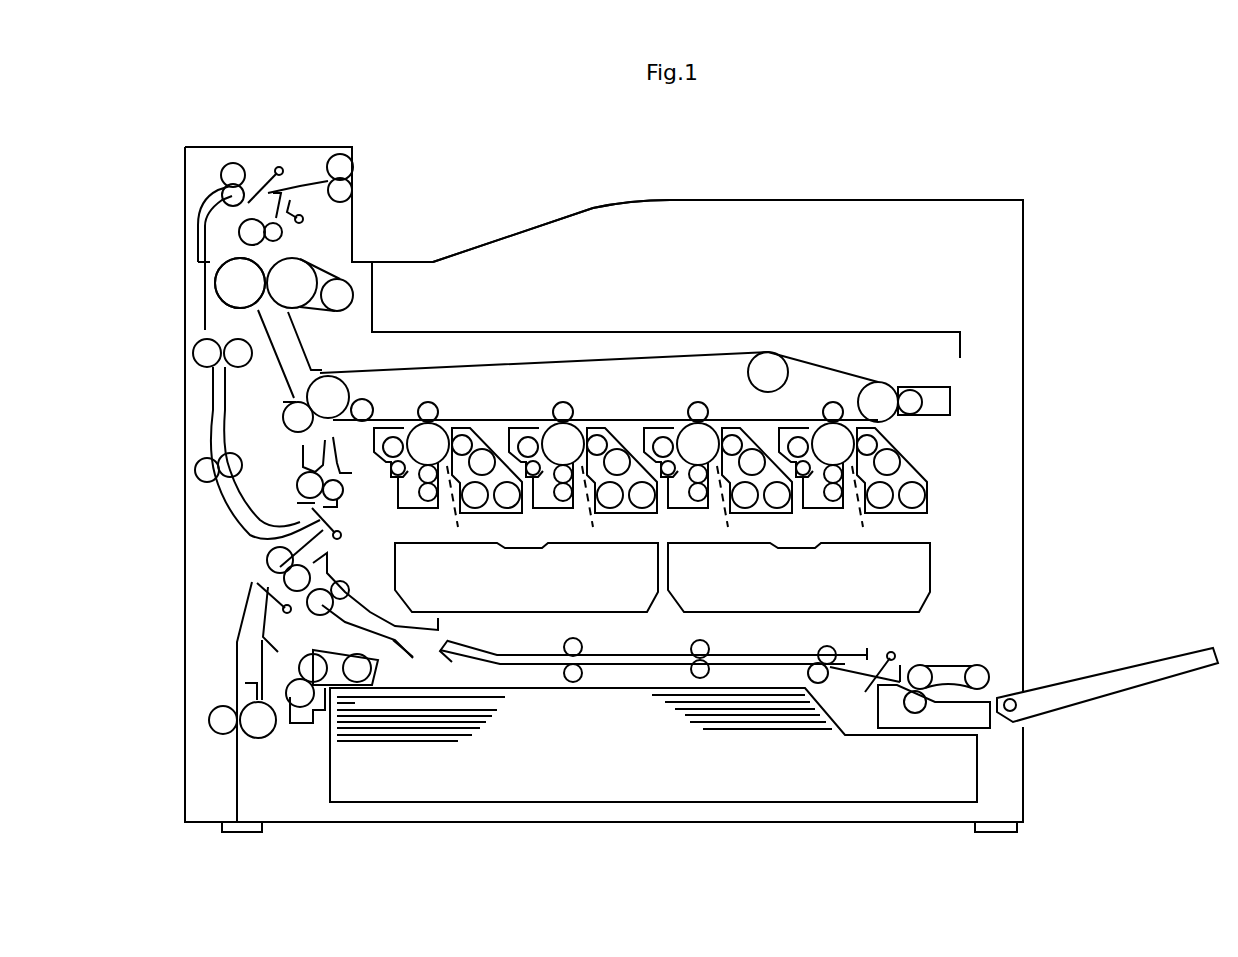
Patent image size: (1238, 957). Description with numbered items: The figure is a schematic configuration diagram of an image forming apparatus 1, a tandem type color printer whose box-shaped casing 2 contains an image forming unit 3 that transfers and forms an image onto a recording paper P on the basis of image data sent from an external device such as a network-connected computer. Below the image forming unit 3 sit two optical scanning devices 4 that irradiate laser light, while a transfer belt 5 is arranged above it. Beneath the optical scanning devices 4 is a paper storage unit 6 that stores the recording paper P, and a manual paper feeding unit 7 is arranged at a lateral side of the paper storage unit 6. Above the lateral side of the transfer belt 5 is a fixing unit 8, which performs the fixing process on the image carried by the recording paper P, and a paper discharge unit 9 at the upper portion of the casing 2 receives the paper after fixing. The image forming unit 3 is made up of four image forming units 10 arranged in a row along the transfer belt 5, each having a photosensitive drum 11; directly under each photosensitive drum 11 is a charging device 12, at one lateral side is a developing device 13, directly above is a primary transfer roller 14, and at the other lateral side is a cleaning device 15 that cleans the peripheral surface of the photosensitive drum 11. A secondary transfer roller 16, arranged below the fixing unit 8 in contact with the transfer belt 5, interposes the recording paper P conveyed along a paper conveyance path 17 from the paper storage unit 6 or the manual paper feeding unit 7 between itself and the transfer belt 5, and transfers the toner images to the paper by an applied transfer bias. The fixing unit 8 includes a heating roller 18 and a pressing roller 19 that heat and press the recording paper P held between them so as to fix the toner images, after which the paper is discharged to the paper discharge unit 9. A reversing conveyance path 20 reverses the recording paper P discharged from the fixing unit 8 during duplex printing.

The image forming apparatus 1 is at (662, 154).
The casing 2 is at (947, 200).
The image forming unit 3 is at (937, 455).
The optical scanning device 4 is at (725, 614).
The transfer belt 5 is at (616, 355).
The paper storage unit 6 is at (520, 802).
The manual paper feeding unit 7 is at (1144, 660).
The fixing unit 8 is at (215, 268).
The paper discharge unit 9 is at (517, 234).
The image forming unit 10 is at (452, 404).
The photosensitive drum 11 is at (402, 467).
The charging device 12 is at (428, 504).
The developing device 13 is at (480, 515).
The primary transfer roller 14 is at (428, 401).
The cleaning device 15 is at (393, 421).
The secondary transfer roller 16 is at (290, 412).
The paper conveyance path 17 is at (258, 586).
The heating roller 18 is at (317, 268).
The pressing roller 19 is at (213, 292).
The reversing conveyance path 20 is at (213, 405).
The recording paper P is at (760, 710).